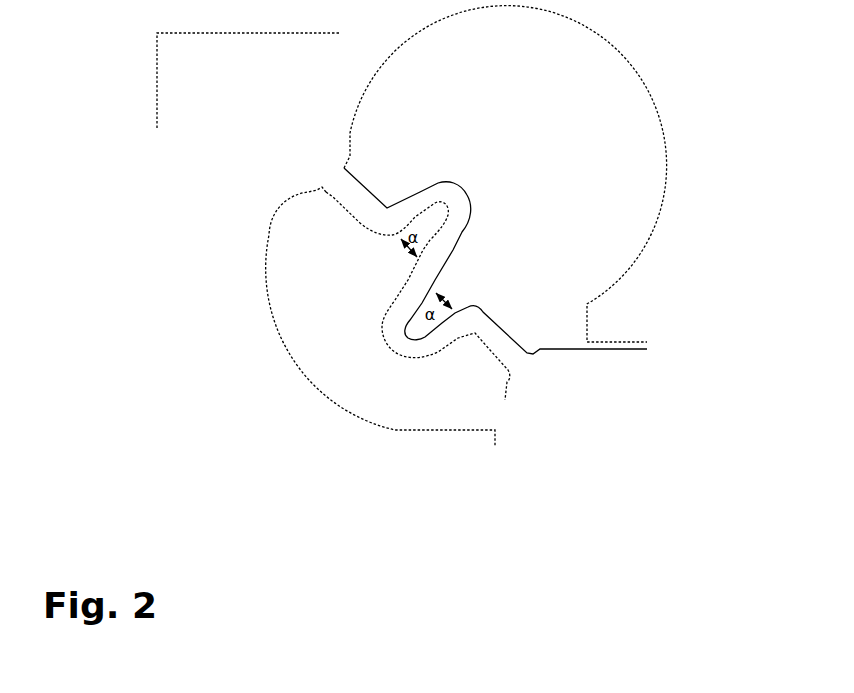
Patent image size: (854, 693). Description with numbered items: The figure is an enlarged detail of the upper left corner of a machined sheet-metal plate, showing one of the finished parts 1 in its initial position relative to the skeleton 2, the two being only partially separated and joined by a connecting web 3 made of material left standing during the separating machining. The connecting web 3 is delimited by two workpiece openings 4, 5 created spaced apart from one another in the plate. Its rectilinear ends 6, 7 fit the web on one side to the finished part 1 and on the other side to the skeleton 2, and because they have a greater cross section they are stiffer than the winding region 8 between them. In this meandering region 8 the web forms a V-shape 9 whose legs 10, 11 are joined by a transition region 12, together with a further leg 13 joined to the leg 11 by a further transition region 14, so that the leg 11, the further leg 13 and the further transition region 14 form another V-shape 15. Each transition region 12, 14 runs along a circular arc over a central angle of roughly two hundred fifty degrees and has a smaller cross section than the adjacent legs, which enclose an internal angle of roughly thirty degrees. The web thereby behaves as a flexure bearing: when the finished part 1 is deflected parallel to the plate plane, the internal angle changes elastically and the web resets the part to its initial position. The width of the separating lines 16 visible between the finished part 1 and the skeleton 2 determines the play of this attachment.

The finished part 1 is at (505, 400).
The skeleton 2 is at (197, 92).
The connecting web 3 is at (472, 260).
The workpiece opening 4 is at (457, 143).
The workpiece opening 5 is at (300, 264).
The rectilinear end 6 is at (507, 357).
The rectilinear end 7 is at (347, 190).
The meandering region 8 is at (377, 270).
The V-shape 9 is at (475, 187).
The leg 10 is at (420, 193).
The leg 11 is at (433, 277).
The transition region 12 is at (466, 214).
The further leg 13 is at (440, 330).
The further transition region 14 is at (398, 350).
The further V-shape 15 is at (365, 343).
The separating line 16 is at (612, 344).